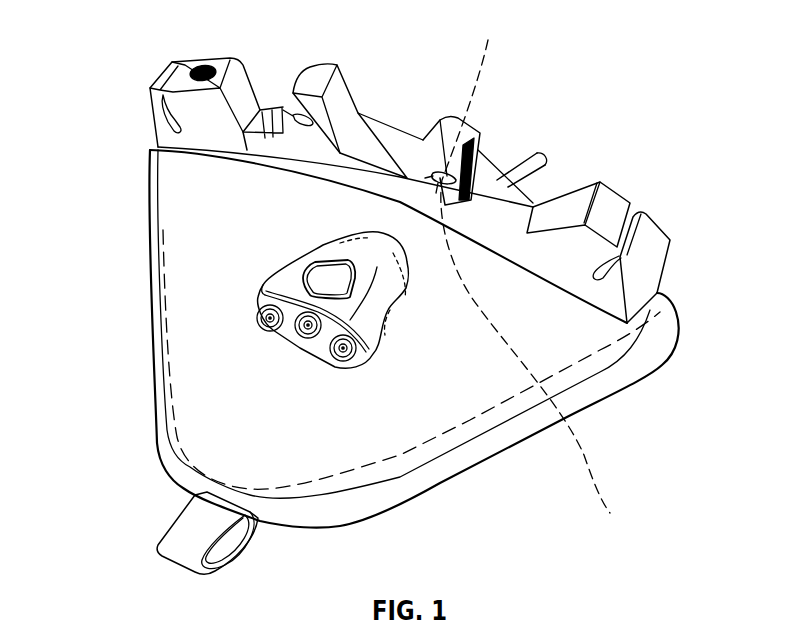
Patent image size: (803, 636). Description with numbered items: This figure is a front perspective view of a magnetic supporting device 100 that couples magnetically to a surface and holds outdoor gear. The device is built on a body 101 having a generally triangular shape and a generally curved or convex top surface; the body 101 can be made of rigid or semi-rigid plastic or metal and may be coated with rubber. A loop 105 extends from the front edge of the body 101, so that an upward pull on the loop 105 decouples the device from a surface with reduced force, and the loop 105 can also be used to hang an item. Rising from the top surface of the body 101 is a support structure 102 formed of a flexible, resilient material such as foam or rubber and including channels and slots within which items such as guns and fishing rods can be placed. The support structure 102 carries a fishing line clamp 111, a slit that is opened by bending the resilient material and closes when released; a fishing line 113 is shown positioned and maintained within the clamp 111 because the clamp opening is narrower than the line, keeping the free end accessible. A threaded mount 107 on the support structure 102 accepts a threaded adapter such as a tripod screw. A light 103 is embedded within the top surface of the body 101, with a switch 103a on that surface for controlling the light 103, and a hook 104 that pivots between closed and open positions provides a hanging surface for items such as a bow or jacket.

The magnetic supporting device 100 is at (100, 44).
The body 101 is at (507, 447).
The support structure 102 is at (665, 226).
The light 103 is at (260, 315).
The switch 103a is at (333, 282).
The hook 104 is at (545, 163).
The loop 105 is at (165, 543).
The threaded mount 107 is at (204, 64).
The fishing line clamp 111 is at (437, 193).
The fishing line 113 is at (478, 88).